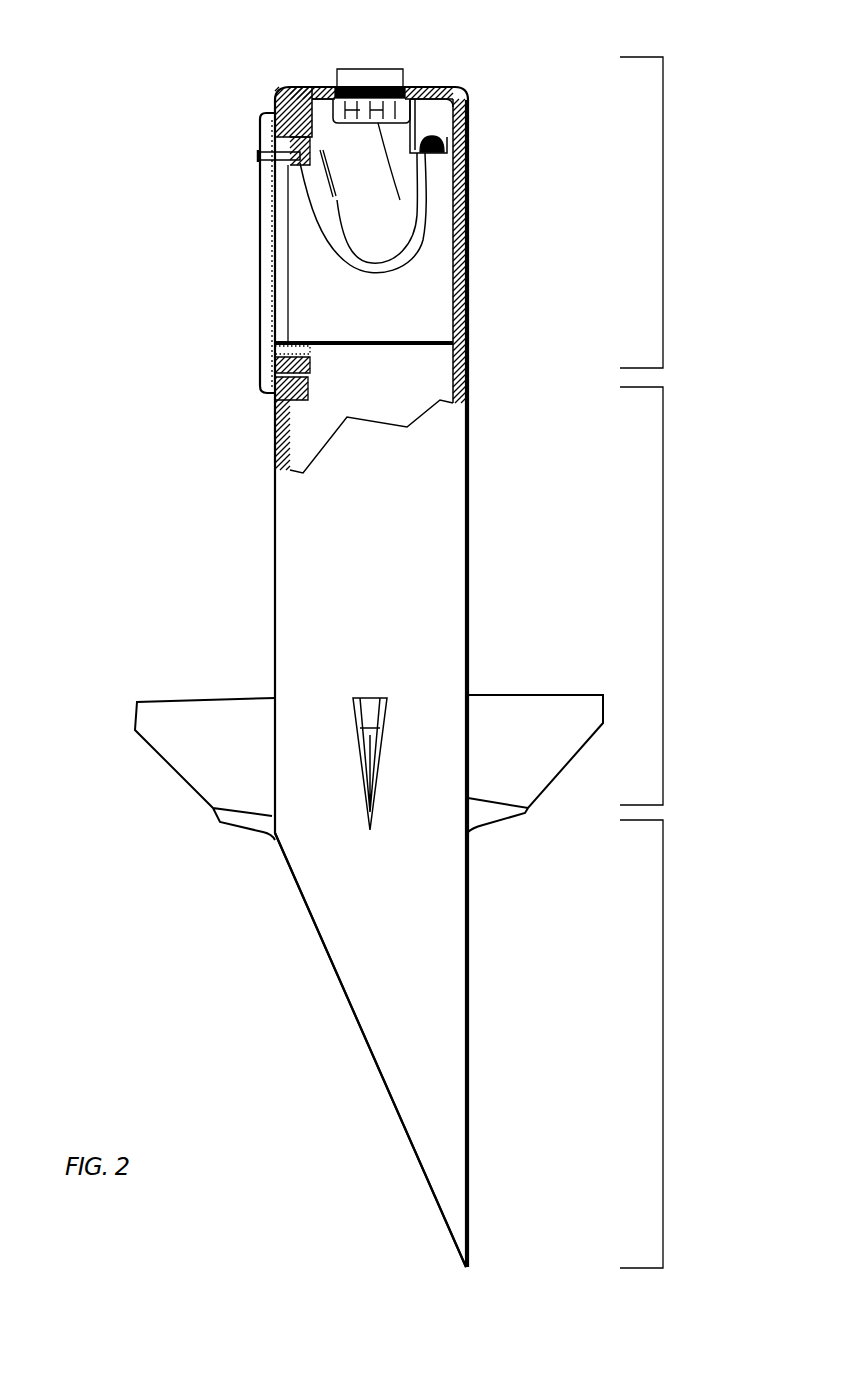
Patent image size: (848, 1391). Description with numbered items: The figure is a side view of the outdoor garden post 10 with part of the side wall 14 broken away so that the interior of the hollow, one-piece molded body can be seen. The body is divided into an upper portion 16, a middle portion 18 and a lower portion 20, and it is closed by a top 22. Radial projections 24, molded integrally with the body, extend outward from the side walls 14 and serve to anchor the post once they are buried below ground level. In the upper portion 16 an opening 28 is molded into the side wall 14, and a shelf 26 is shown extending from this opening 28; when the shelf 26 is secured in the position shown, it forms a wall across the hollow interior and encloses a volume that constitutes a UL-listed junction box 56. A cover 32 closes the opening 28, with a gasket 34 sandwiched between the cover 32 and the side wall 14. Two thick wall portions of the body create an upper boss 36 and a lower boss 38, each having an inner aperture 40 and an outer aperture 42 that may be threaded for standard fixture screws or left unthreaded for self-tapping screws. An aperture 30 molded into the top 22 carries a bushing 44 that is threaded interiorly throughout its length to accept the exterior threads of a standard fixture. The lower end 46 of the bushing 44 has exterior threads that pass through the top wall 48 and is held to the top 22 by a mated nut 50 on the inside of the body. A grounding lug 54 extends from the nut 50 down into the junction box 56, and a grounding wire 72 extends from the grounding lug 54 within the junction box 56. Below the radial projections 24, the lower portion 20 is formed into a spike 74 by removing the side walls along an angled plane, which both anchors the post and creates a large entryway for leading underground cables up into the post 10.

The outdoor garden post 10 is at (176, 584).
The side wall 14 is at (466, 374).
The upper portion 16 is at (664, 212).
The middle portion 18 is at (664, 596).
The lower portion 20 is at (664, 1044).
The closed top 22 is at (445, 87).
The radial projections 24 is at (243, 759).
The shelf 26 is at (432, 340).
The opening 28 is at (282, 248).
The aperture 30 is at (410, 88).
The cover 32 is at (260, 183).
The gasket 34 is at (262, 211).
The upper boss 36 is at (262, 150).
The lower boss 38 is at (272, 365).
The inner aperture 40 is at (333, 193).
The outer aperture 42 is at (310, 137).
The bushing 44 is at (353, 78).
The lower end of the bushing 46 is at (398, 196).
The top wall 48 is at (307, 88).
The nut 50 is at (455, 127).
The grounding lug 54 is at (448, 148).
The junction box 56 is at (430, 293).
The grounding wire 72 is at (420, 244).
The spike 74 is at (455, 1079).